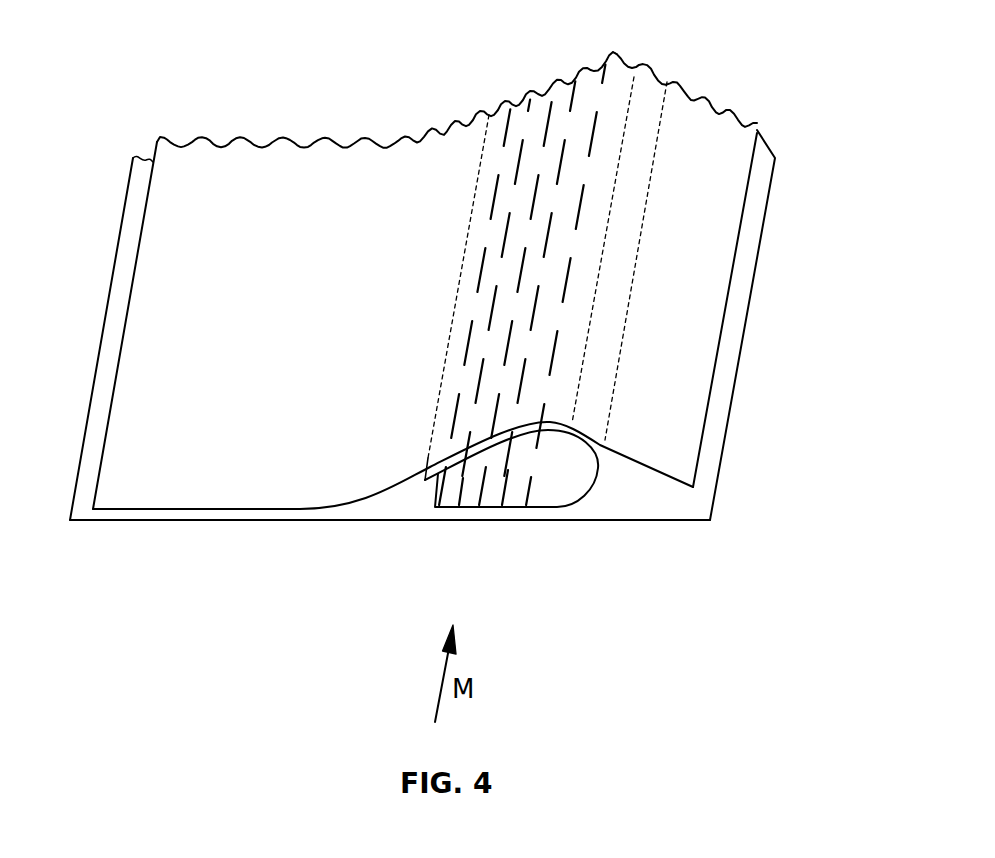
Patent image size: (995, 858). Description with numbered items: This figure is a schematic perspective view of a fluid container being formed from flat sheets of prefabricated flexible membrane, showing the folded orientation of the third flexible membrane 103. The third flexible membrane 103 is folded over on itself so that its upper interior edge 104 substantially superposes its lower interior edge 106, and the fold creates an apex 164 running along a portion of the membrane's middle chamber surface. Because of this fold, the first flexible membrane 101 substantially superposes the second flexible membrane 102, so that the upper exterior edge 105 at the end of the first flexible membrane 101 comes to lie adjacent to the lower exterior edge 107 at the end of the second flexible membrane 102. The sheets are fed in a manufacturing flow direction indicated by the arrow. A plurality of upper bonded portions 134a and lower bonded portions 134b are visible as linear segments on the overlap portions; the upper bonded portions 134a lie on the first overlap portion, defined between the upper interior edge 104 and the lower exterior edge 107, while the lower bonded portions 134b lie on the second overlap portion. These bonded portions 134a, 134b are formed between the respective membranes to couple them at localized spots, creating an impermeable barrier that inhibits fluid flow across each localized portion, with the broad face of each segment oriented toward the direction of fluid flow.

The first flexible membrane 101 is at (163, 497).
The second flexible membrane 102 is at (147, 181).
The third flexible membrane 103 is at (582, 487).
The upper interior edge 104 is at (440, 385).
The upper exterior edge 105 is at (738, 247).
The lower interior edge 106 is at (430, 489).
The lower exterior edge 107 is at (743, 347).
The upper bonded portions 134a is at (493, 308).
The lower bonded portions 134b is at (493, 488).
The apex 164 is at (662, 108).